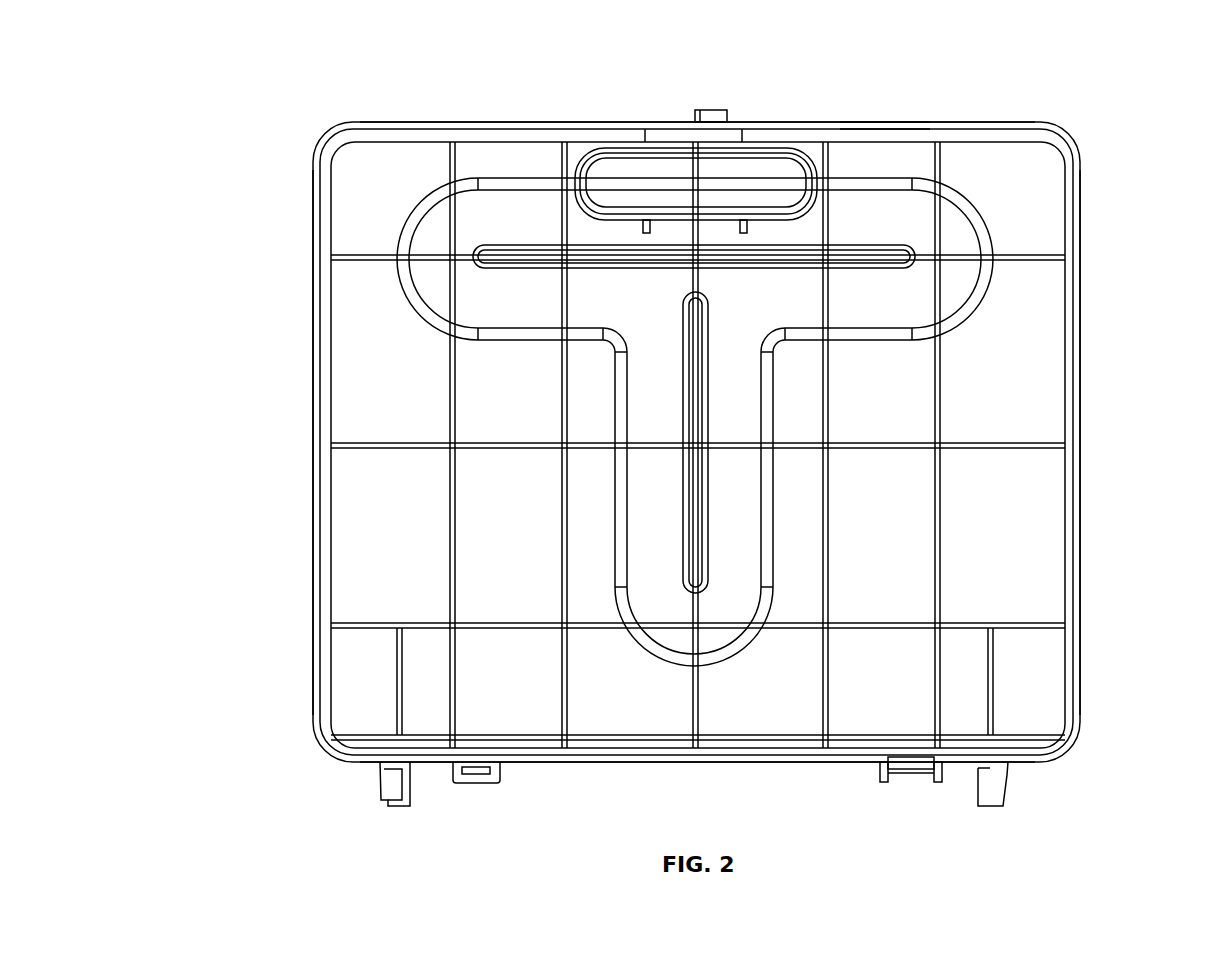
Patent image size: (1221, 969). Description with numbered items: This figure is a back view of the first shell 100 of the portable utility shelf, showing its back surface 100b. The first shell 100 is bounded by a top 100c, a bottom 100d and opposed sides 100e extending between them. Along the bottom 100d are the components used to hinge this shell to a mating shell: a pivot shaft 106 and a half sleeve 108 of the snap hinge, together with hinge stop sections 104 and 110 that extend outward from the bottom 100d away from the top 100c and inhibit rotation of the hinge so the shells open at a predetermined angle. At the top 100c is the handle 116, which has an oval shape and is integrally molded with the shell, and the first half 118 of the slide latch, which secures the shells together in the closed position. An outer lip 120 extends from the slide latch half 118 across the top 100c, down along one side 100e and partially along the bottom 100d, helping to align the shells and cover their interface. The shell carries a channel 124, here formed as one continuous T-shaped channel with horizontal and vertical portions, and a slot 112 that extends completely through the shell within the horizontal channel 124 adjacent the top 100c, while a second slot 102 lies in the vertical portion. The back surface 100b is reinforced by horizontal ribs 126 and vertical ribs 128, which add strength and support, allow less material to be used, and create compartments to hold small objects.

The first shell 100 is at (345, 499).
The back surface 100b is at (363, 533).
The top 100c is at (565, 109).
The bottom 100d is at (710, 779).
The opposed sides 100e is at (1099, 515).
The vertical slot 102 is at (682, 549).
The first section of hinge stop 104 is at (1010, 790).
The pivot shaft 106 is at (910, 793).
The half sleeve 108 is at (489, 793).
The second section of hinge stop 110 is at (382, 794).
The slot 112 is at (901, 263).
The handle 116 is at (788, 181).
The first half of slide latch 118 is at (736, 106).
The outer lip 120 is at (893, 111).
The channel 124 is at (491, 294).
The horizontal ribs 126 is at (433, 386).
The vertical ribs 128 is at (383, 435).